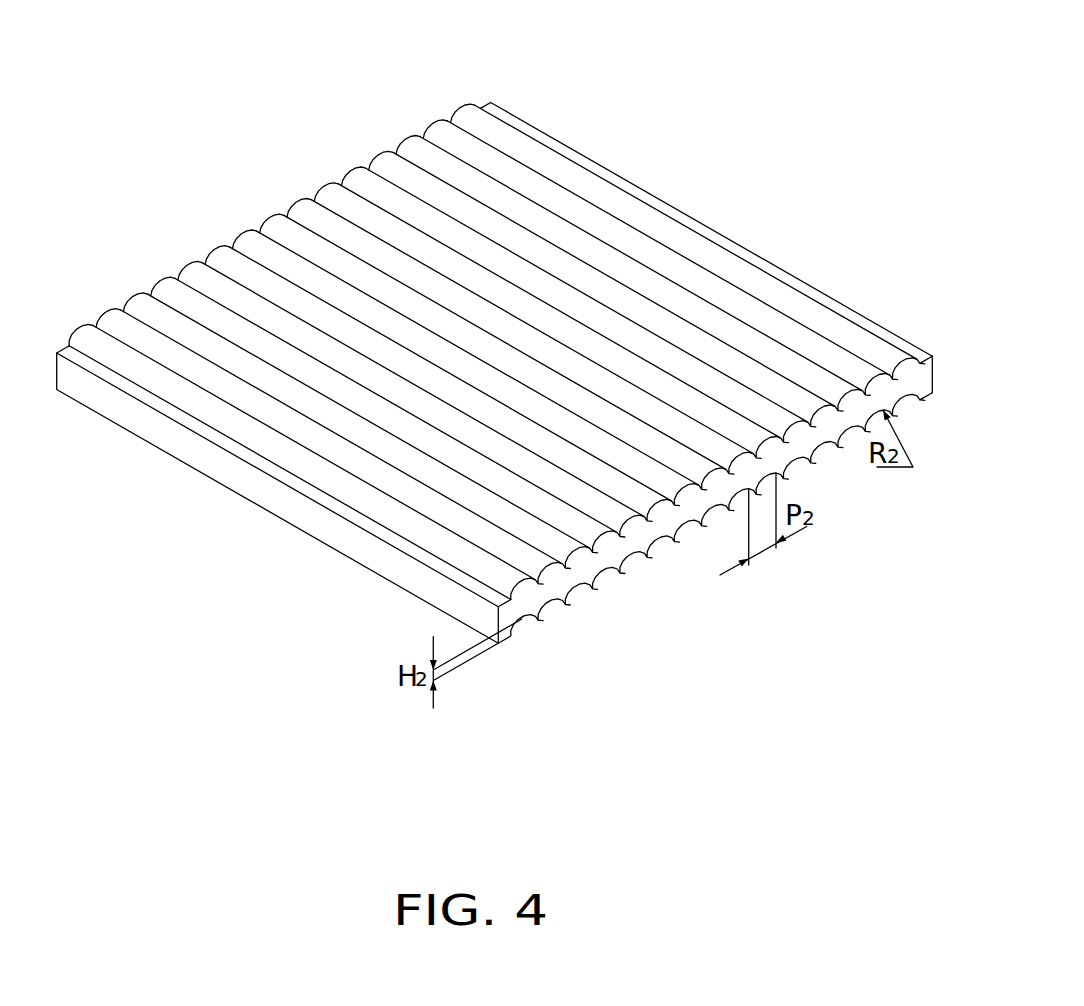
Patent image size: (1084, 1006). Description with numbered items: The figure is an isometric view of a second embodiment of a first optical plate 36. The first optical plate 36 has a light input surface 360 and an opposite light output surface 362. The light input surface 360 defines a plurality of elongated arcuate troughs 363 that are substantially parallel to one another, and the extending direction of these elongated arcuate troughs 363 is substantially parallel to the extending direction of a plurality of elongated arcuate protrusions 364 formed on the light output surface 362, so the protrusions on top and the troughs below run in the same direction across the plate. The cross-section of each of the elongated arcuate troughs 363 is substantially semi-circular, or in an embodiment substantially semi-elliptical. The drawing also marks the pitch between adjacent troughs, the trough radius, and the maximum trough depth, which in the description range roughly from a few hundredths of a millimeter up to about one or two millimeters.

The first optical plate 36 is at (557, 67).
The light input surface 360 is at (505, 640).
The light output surface 362 is at (921, 353).
The elongated arcuate troughs 363 is at (640, 558).
The elongated arcuate protrusions 364 is at (710, 250).